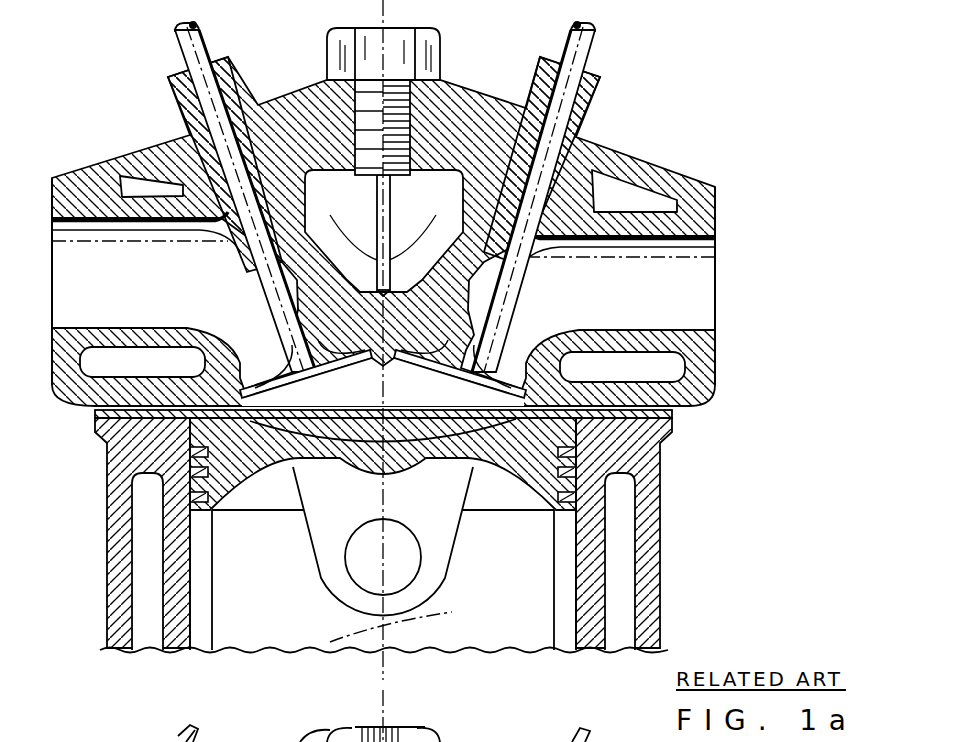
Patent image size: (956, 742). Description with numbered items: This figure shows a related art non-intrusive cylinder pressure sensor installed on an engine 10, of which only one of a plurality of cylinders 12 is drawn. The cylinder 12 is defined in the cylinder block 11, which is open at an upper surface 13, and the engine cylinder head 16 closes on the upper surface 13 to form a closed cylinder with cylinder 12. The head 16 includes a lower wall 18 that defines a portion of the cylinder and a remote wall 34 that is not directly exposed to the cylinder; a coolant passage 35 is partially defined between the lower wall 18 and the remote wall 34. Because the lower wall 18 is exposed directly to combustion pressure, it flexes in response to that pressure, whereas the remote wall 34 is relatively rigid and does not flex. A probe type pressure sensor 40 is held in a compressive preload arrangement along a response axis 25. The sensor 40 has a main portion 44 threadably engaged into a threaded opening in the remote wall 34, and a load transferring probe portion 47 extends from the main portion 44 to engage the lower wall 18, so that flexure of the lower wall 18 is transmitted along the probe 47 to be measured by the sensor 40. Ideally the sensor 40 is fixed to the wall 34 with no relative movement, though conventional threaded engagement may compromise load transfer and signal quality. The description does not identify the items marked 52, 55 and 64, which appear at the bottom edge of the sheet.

In FIG. 1a, the engine 10 is at (409, 346).
In FIG. 1a, the cylinder block 11 is at (650, 555).
In FIG. 1a, the cylinder 12 is at (560, 592).
In FIG. 1a, the upper surface 13 is at (676, 420).
In FIG. 1a, the engine cylinder head 16 is at (694, 193).
In FIG. 1a, the lower wall 18 is at (383, 368).
In FIG. 1a, the response axis 25 is at (407, 622).
In FIG. 1a, the remote wall 34 is at (480, 123).
In FIG. 1a, the coolant passage 35 is at (337, 190).
In FIG. 1a, the probe type pressure sensor 40 is at (355, 20).
In FIG. 1a, the main portion 44 is at (326, 105).
In FIG. 1a, the load transferring probe portion 47 is at (390, 242).
In FIG. 1b, the spark plug (second embodiment) 52 is at (352, 724).
In FIG. 1b, the spark plug shell 55 is at (425, 730).
In FIG. 1b, the valve (second embodiment) 64 is at (384, 733).